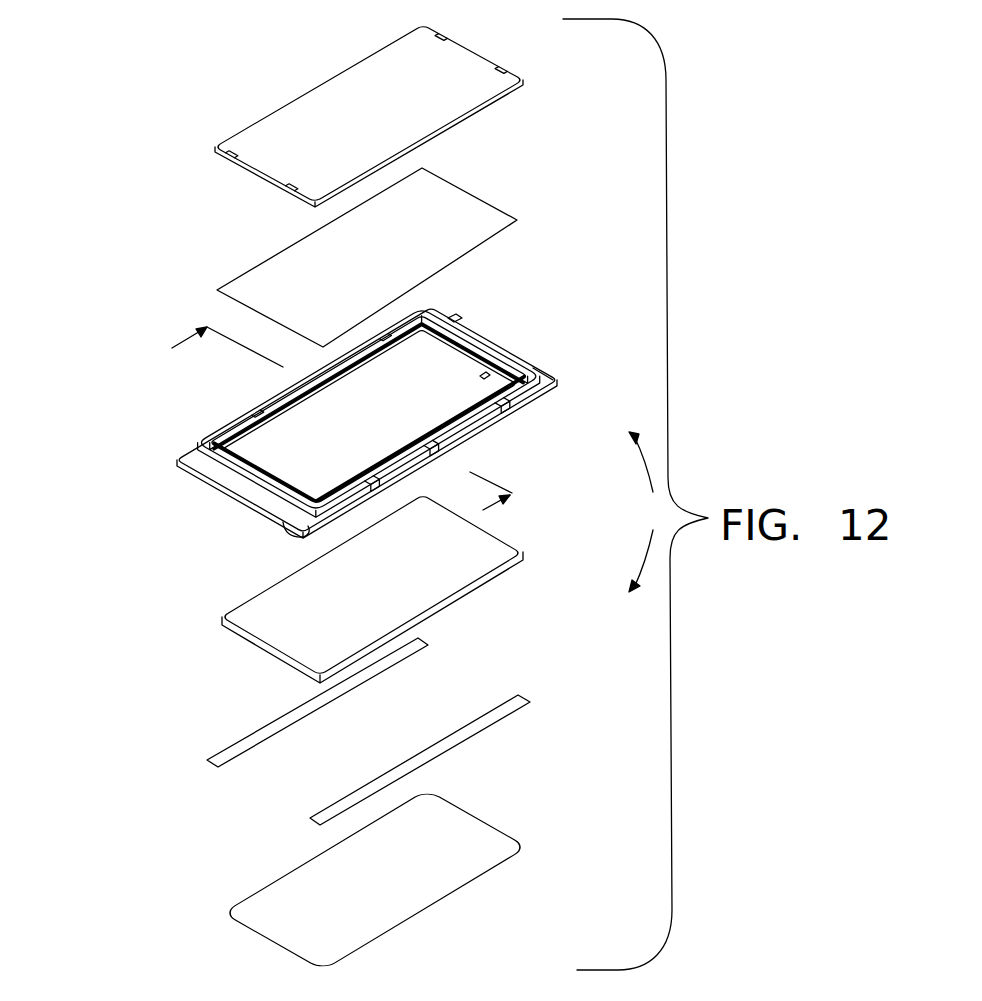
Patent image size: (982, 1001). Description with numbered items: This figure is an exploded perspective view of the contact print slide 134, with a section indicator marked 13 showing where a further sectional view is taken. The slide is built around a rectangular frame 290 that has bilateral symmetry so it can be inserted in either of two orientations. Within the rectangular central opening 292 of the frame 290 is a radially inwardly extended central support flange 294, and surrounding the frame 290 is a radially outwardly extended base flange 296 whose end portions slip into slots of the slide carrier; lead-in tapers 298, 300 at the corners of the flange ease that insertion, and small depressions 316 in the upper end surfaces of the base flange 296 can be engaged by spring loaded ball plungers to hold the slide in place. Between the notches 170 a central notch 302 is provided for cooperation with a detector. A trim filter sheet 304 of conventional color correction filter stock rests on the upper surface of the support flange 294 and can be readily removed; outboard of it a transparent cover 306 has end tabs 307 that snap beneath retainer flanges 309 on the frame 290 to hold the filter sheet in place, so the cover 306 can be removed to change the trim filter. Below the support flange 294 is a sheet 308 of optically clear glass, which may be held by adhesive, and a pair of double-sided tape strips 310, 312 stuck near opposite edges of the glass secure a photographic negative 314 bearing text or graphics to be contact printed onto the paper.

The contact print slide 134 is at (649, 512).
The rectangular frame 290 is at (383, 439).
The rectangular central opening 292 is at (399, 415).
The central support flange 294 is at (483, 377).
The base flange 296 is at (487, 290).
The lead-in taper 298 is at (287, 520).
The lead-in taper 300 is at (553, 372).
The central notch 302 is at (307, 357).
The trim filter sheet 304 is at (505, 175).
The transparent cover 306 is at (355, 140).
The end tab 307 is at (527, 44).
The sheet of optically clear glass 308 is at (243, 612).
The retainer flange 309 is at (462, 357).
The double-sided tape strip 310 is at (222, 758).
The double-sided tape strip 312 is at (383, 782).
The photographic negative 314 is at (538, 812).
The depression 316 is at (520, 352).
The notch 170 is at (390, 340).
The section line 13 is at (357, 406).